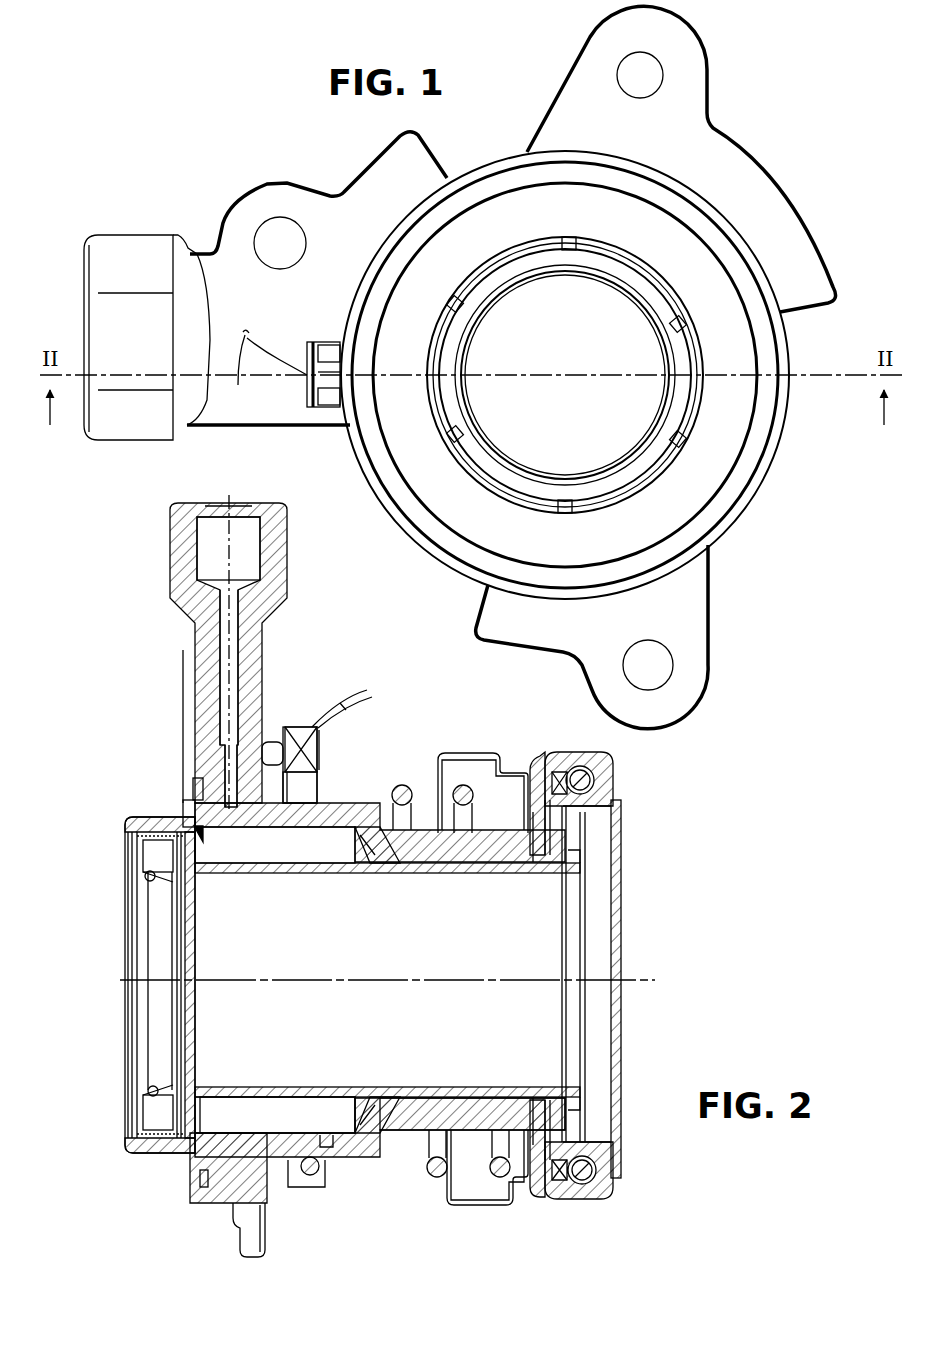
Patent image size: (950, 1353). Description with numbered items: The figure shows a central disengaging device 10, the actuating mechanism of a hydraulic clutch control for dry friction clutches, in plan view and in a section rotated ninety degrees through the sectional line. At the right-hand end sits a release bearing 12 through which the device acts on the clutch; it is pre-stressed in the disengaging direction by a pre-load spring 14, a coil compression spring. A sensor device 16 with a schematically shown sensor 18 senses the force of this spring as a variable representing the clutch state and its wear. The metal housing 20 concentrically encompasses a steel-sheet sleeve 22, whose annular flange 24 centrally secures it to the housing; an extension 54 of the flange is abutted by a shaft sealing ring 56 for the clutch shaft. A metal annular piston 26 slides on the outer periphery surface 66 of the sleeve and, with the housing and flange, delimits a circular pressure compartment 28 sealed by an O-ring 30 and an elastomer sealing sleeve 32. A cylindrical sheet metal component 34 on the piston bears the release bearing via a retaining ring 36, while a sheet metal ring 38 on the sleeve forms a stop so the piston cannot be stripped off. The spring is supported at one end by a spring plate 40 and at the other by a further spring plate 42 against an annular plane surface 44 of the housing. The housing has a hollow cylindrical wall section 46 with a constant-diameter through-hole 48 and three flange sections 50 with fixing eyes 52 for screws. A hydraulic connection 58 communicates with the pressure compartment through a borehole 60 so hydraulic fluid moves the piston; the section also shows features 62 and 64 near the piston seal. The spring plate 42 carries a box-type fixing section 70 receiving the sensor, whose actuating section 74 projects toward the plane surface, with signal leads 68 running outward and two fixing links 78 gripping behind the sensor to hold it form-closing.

In FIG. 1, the central disengaging device 10 is at (780, 490).
In FIG. 2, the central disengaging device 10 is at (406, 716).
In FIG. 1, the release bearing 12 is at (574, 225).
In FIG. 2, the release bearing 12 is at (560, 752).
In FIG. 2, the pre-load spring 14 is at (403, 778).
In FIG. 1, the sensor device 16 is at (300, 340).
In FIG. 2, the sensor device 16 is at (306, 712).
In FIG. 1, the sensor 18 is at (318, 398).
In FIG. 2, the sensor 18 is at (322, 740).
In FIG. 1, the housing 20 is at (358, 167).
In FIG. 2, the housing 20 is at (292, 534).
In FIG. 2, the sleeve 22 is at (242, 1087).
In FIG. 2, the annular flange 24 is at (183, 812).
In FIG. 2, the annular piston 26 is at (433, 1110).
In FIG. 2, the pressure compartment 28 is at (313, 860).
In FIG. 2, the O-ring 30 is at (197, 785).
In FIG. 2, the sealing sleeve 32 is at (372, 1095).
In FIG. 2, the sheet metal component 34 is at (480, 1105).
In FIG. 2, the retaining ring 36 is at (563, 840).
In FIG. 1, the sheet metal ring 38 is at (565, 281).
In FIG. 2, the sheet metal ring 38 is at (585, 913).
In FIG. 2, the spring plate 40 is at (475, 753).
In FIG. 1, the spring plate 42 is at (684, 178).
In FIG. 2, the spring plate 42 is at (316, 1192).
In FIG. 2, the plane surface 44 is at (270, 1190).
In FIG. 2, the wall section 46 is at (331, 1147).
In FIG. 2, the through-hole 48 is at (268, 1135).
In FIG. 1, the flange sections 50 is at (232, 246).
In FIG. 2, the flange sections 50 is at (190, 640).
In FIG. 1, the fixing eyes 52 is at (262, 236).
In FIG. 2, the extension 54 is at (125, 832).
In FIG. 2, the shaft sealing ring 56 is at (150, 873).
In FIG. 1, the hydraulic connection 58 is at (84, 362).
In FIG. 2, the hydraulic connection 58 is at (218, 535).
In FIG. 2, the borehole 60 is at (235, 610).
In FIG. 2, the sealing wedge 62 is at (207, 818).
In FIG. 2, the groove 64 is at (198, 838).
In FIG. 2, the outer periphery surface 66 is at (285, 1098).
In FIG. 1, the signal leads 68 is at (238, 385).
In FIG. 2, the signal leads 68 is at (367, 690).
In FIG. 1, the fixing section 70 is at (318, 342).
In FIG. 2, the fixing section 70 is at (284, 724).
In FIG. 2, the actuating section 74 is at (273, 752).
In FIG. 1, the fixing links 78 is at (342, 372).
In FIG. 2, the fixing links 78 is at (320, 750).